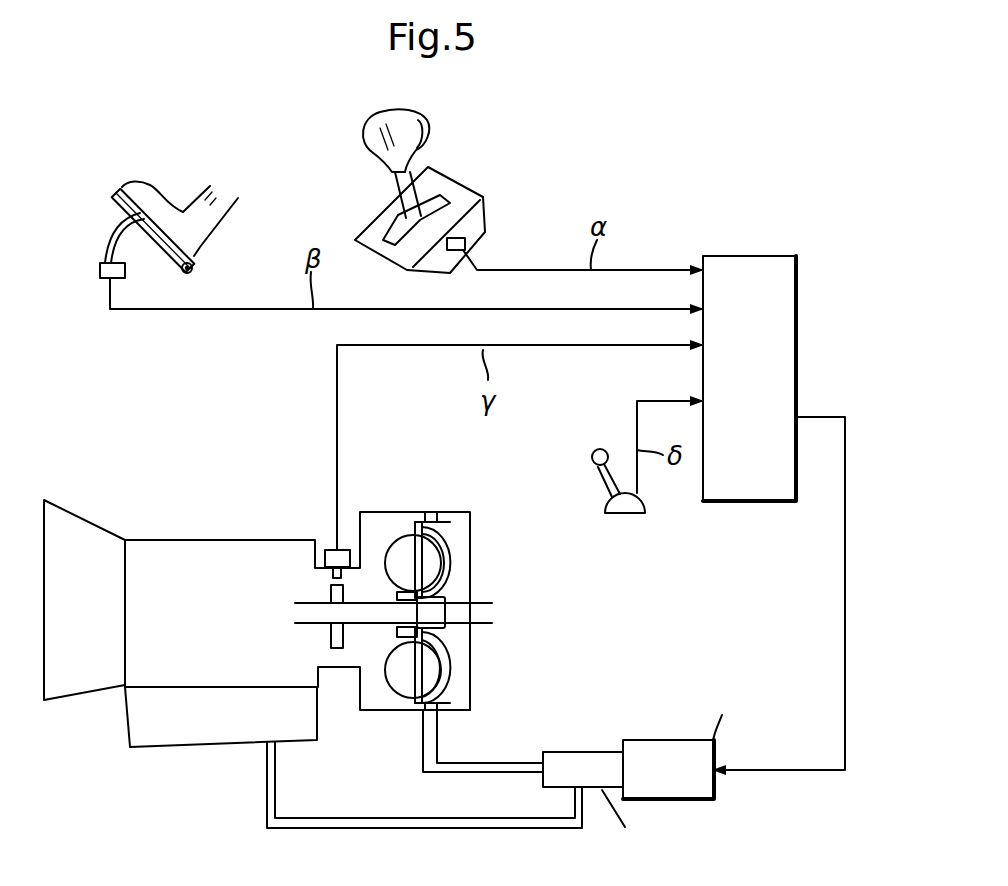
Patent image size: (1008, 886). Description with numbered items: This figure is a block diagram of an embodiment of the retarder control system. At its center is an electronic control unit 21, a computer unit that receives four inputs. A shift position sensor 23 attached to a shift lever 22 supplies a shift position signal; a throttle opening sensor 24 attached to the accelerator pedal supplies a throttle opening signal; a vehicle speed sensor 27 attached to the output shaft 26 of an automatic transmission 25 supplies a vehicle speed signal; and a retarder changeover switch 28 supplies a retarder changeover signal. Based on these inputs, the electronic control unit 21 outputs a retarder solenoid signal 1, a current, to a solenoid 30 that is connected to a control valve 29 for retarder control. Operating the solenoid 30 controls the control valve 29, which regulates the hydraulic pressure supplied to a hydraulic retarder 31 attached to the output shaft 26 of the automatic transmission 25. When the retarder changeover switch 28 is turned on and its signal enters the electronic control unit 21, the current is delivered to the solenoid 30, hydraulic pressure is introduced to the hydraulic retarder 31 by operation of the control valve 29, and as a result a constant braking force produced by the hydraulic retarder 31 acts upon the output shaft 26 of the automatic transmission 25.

The retarder solenoid signal 1 is at (845, 612).
The electronic control unit 21 is at (757, 256).
The shift lever 22 is at (410, 160).
The shift position sensor 23 is at (465, 243).
The throttle opening sensor 24 is at (97, 272).
The automatic transmission 25 is at (192, 535).
The output shaft 26 is at (308, 608).
The vehicle speed sensor 27 is at (328, 550).
The retarder changeover switch 28 is at (598, 449).
The control valve 29 is at (582, 760).
The solenoid 30 is at (680, 745).
The hydraulic retarder 31 is at (458, 545).